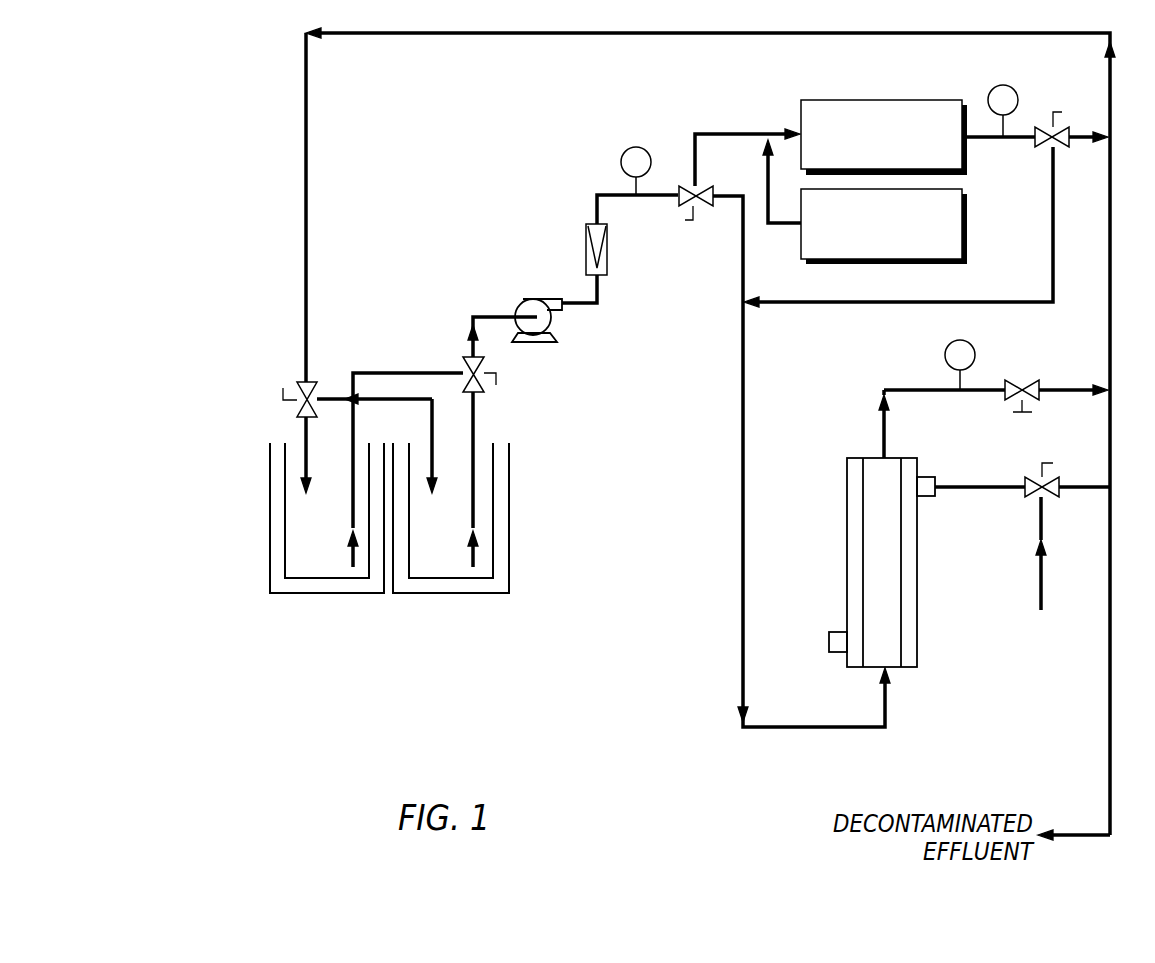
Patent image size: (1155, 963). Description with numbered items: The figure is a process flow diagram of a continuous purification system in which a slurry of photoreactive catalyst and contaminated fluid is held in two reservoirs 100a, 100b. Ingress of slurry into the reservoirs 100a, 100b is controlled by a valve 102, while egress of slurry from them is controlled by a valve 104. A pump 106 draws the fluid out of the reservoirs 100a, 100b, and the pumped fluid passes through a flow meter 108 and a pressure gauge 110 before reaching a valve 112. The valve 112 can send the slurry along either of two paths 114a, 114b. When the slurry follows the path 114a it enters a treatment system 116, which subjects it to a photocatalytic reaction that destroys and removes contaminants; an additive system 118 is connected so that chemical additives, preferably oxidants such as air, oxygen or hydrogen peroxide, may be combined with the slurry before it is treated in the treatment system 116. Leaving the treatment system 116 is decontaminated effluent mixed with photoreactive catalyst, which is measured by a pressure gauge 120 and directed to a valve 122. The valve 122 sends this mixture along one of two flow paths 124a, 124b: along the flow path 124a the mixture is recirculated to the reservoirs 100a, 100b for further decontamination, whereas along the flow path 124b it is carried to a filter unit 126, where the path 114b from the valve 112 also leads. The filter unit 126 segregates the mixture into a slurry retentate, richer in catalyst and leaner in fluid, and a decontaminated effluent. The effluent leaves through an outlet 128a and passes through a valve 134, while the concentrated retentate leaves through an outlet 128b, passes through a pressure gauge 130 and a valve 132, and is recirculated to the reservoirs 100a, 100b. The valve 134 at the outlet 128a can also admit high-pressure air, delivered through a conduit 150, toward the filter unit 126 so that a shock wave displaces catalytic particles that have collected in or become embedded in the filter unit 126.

The reservoir 100a is at (330, 587).
The reservoir 100b is at (435, 587).
The valve 102 is at (319, 389).
The valve 104 is at (462, 360).
The pump 106 is at (540, 295).
The flow meter 108 is at (583, 248).
The pressure gauge 110 is at (633, 146).
The valve 112 is at (687, 210).
The path 114a is at (708, 133).
The path 114b is at (742, 393).
The treatment system 116 is at (848, 100).
The additive system 118 is at (910, 268).
The pressure gauge 120 is at (1005, 84).
The valve 122 is at (1037, 150).
The flow path 124a is at (1085, 130).
The flow path 124b is at (993, 300).
The filter unit 126 is at (847, 560).
The outlet 128a is at (983, 490).
The outlet 128b is at (910, 388).
The pressure gauge 130 is at (950, 342).
The valve 132 is at (1023, 378).
The valve 134 is at (1035, 473).
The conduit 150 is at (1037, 570).